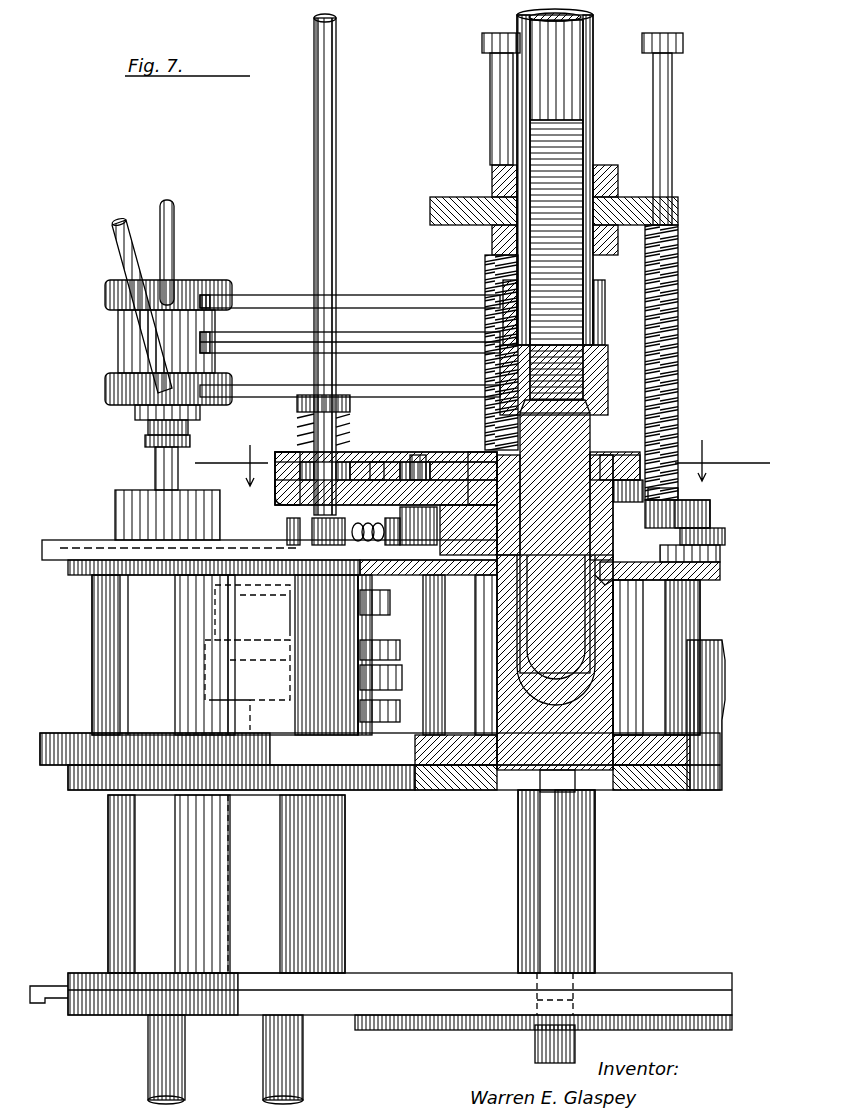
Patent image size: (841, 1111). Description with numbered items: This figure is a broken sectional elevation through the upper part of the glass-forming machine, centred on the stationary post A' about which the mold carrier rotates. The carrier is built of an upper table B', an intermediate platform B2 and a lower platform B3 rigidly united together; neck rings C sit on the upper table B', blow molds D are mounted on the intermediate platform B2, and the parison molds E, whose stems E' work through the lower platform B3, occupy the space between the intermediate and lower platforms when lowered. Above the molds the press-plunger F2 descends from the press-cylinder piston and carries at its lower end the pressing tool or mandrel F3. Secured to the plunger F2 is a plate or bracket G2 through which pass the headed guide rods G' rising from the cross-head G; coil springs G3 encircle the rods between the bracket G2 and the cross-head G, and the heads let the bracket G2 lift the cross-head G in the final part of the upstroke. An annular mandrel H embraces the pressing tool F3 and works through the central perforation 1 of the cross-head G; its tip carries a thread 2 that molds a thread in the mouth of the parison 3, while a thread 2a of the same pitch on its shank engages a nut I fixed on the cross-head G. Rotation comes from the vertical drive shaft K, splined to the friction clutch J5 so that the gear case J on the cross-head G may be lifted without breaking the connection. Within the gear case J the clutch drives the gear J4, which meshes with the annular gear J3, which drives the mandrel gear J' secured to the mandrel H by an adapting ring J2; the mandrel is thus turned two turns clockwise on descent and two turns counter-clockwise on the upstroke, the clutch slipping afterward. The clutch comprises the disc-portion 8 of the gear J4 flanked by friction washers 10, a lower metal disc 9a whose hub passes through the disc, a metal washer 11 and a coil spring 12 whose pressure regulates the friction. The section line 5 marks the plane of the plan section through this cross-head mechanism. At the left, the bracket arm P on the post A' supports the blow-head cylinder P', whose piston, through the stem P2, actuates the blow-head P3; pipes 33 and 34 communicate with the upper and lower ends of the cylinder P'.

The vertical drive shaft K is at (330, 127).
The stationary post A' is at (576, 177).
The press-plunger F2 is at (570, 80).
The guide rods G' is at (582, 129).
The plate or bracket G2 is at (680, 212).
The coil springs G3 is at (492, 284).
The pressing tool or mandrel F3 is at (600, 405).
The gear case J is at (457, 470).
The mandrel gear J' is at (477, 462).
The adapting ring J2 is at (605, 452).
The annular gear J3 is at (420, 442).
The frictionally driven gear J4 is at (378, 452).
The friction clutch device J5 is at (345, 445).
The friction washers 10 is at (300, 456).
The metal washer 11 is at (360, 450).
The coil spring 12 is at (297, 418).
The disc-portion 8 is at (320, 490).
The lower metal disc 9a is at (300, 512).
The upper table or platform B' is at (256, 571).
The blow molds D is at (278, 650).
The intermediate platform B2 is at (55, 735).
The parison molds E is at (392, 851).
The stems or shanks E' is at (394, 947).
The lower platform B3 is at (70, 973).
The thread 2 is at (620, 582).
The blank or parison 3 is at (590, 635).
The shank thread 2a is at (672, 492).
The nut I is at (688, 505).
The annular mandrel H is at (700, 514).
The cross-head G is at (725, 532).
The central perforation 1 is at (715, 548).
The neck rings C is at (700, 560).
The blow-head cylinder P' is at (189, 335).
The bracket arm P is at (350, 331).
The stem P2 is at (160, 466).
The blow-head P3 is at (130, 522).
The pipe 33 is at (173, 240).
The pipe 34 is at (128, 266).
The section line 5— 5 is at (482, 463).